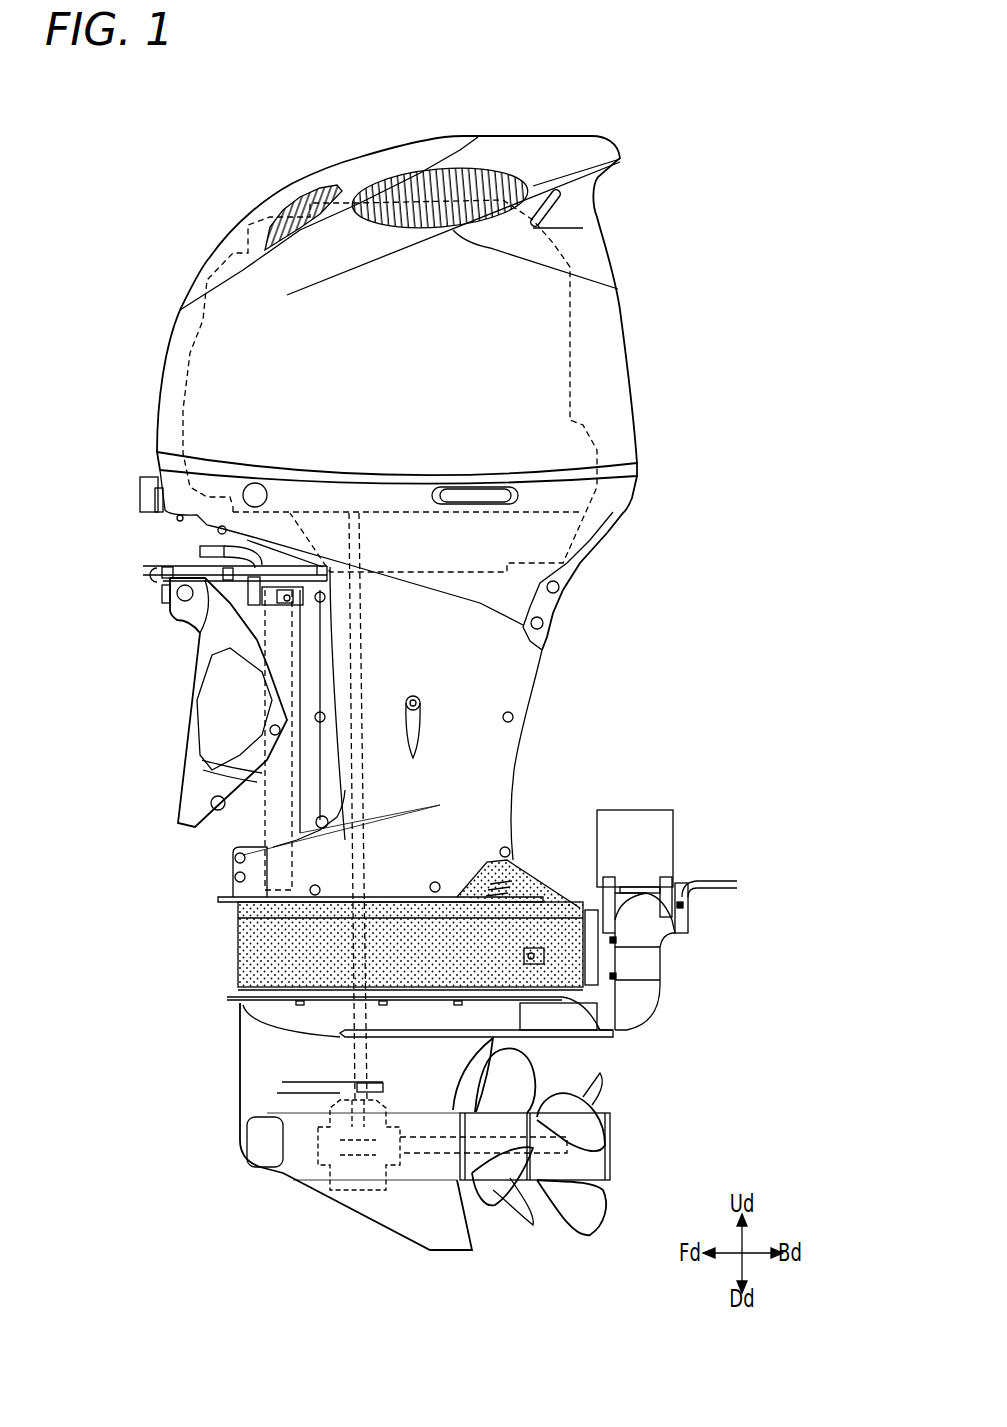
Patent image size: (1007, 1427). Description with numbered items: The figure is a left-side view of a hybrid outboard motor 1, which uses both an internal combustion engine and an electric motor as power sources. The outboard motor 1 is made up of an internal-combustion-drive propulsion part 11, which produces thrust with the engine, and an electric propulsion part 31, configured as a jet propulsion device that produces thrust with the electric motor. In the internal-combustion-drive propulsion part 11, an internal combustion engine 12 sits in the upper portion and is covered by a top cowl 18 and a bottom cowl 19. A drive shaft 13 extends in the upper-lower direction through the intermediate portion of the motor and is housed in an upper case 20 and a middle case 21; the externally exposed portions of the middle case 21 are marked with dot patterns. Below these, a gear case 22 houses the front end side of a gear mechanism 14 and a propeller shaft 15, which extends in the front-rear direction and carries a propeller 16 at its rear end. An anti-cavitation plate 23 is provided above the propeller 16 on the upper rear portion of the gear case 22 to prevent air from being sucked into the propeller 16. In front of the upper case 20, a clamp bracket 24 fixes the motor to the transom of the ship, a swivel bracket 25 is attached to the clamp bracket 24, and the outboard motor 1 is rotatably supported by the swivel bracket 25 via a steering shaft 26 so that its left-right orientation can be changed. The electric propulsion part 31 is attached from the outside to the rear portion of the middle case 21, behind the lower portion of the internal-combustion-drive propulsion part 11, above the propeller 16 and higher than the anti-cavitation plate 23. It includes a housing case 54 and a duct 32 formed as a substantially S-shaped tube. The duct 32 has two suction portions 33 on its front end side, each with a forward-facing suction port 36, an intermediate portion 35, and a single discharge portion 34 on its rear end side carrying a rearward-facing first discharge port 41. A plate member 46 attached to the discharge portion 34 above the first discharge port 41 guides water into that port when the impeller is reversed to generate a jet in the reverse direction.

The hybrid outboard motor 1 is at (641, 110).
The internal-combustion-drive propulsion part 11 is at (158, 266).
The internal combustion engine 12 is at (215, 375).
The drive shaft 13 is at (357, 667).
The gear mechanism 14 is at (318, 1152).
The propeller shaft 15 is at (433, 1160).
The propeller 16 is at (492, 1190).
The top cowl 18 is at (628, 342).
The bottom cowl 19 is at (640, 503).
The upper case 20 is at (513, 750).
The middle case 21 is at (238, 950).
The gear case 22 is at (240, 1080).
The anti-cavitation plate 23 is at (615, 1035).
The clamp bracket 24 is at (213, 642).
The swivel bracket 25 is at (255, 816).
The steering shaft 26 is at (265, 707).
The electric propulsion part 31 is at (720, 832).
The duct 32 is at (688, 961).
The suction portion 33 is at (600, 1032).
The discharge portion 34 is at (673, 890).
The intermediate portion 35 is at (660, 975).
The suction port 36 is at (573, 1022).
The first discharge port 41 is at (690, 915).
The plate member 46 is at (740, 884).
The housing case 54 is at (640, 822).